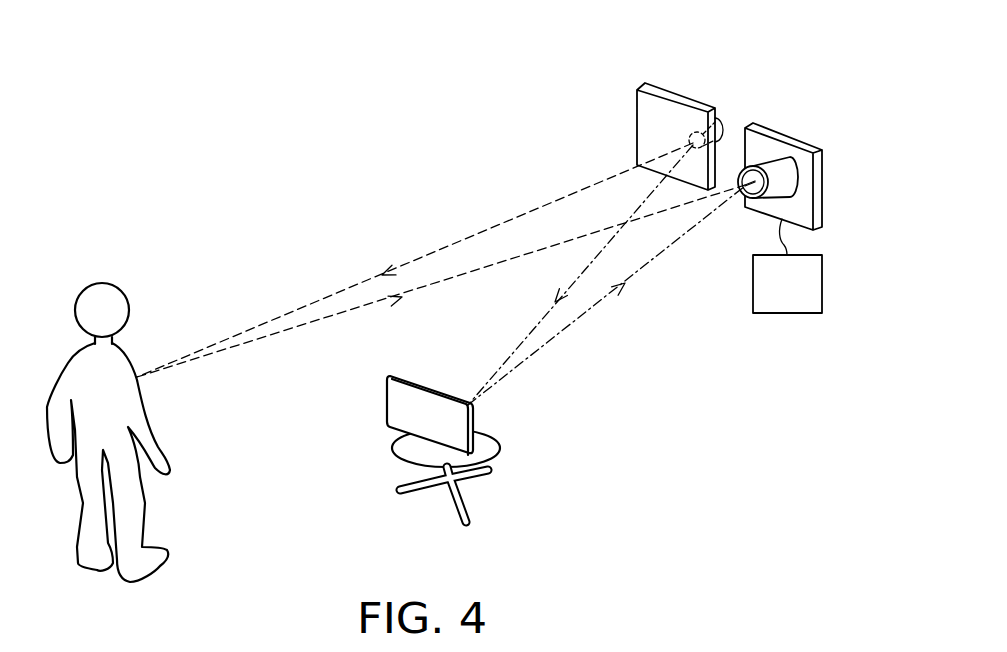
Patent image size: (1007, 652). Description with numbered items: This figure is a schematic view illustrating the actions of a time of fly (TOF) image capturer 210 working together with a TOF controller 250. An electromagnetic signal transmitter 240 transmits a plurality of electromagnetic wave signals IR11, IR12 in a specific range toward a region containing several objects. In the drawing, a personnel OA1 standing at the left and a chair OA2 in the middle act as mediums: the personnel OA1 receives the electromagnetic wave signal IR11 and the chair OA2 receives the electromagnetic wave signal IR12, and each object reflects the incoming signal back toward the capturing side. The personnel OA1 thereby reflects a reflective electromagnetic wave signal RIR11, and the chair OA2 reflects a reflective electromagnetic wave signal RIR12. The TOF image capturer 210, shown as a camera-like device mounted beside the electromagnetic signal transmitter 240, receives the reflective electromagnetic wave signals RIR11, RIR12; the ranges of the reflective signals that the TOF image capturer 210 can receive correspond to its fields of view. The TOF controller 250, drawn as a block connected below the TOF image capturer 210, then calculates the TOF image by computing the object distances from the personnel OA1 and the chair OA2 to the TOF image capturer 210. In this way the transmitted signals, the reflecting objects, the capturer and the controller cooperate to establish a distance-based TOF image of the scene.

The personnel OA1 is at (147, 512).
The chair OA2 is at (503, 448).
The TOF image capturer 210 is at (780, 132).
The electromagnetic signal transmitter 240 is at (687, 95).
The TOF controller 250 is at (787, 313).
The electromagnetic wave signal IR11 is at (540, 203).
The electromagnetic wave signal IR12 is at (640, 193).
The reflective electromagnetic wave signal RIR11 is at (323, 320).
The reflective electromagnetic wave signal RIR12 is at (658, 257).